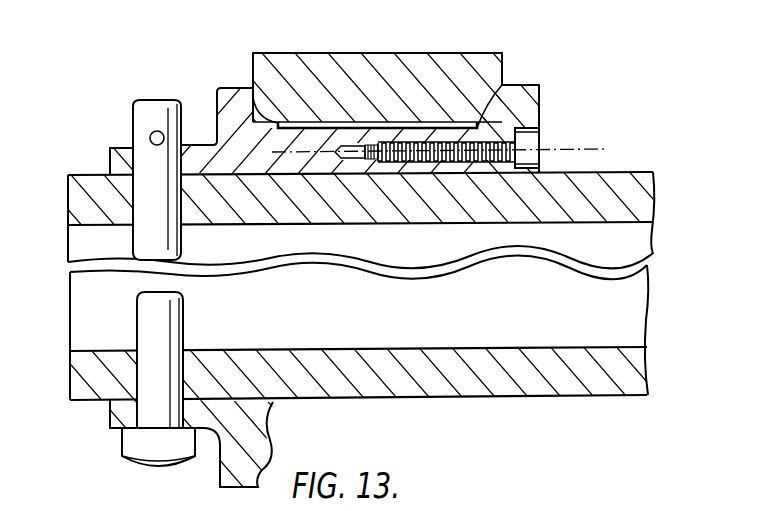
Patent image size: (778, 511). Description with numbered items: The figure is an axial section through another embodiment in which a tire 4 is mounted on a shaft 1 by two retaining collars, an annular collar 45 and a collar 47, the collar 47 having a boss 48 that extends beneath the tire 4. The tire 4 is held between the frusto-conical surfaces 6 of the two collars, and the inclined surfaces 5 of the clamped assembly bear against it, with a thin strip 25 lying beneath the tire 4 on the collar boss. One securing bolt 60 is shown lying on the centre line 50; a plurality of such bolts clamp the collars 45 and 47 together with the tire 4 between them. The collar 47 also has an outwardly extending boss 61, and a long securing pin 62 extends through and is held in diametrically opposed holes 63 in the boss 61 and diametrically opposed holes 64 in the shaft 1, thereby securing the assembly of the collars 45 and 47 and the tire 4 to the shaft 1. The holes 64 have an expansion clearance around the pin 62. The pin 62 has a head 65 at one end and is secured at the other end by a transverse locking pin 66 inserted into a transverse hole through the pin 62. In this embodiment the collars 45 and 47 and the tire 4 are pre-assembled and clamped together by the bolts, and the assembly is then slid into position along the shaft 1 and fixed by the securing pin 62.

The shaft 1 is at (581, 378).
The tire 4 is at (405, 75).
The inclined surface 5 is at (297, 95).
The frusto-conical surfaces 6 is at (256, 98).
The shim strip 25 is at (348, 128).
The annular collar 45 is at (515, 92).
The collar 47 is at (240, 93).
The boss 48 is at (322, 165).
The centre line 50 is at (592, 150).
The securing bolt 60 is at (530, 143).
The boss 61 is at (197, 157).
The securing pin 62 is at (171, 345).
The holes 63 is at (117, 426).
The holes 64 is at (129, 358).
The head 65 is at (165, 443).
The transverse locking pin 66 is at (150, 137).